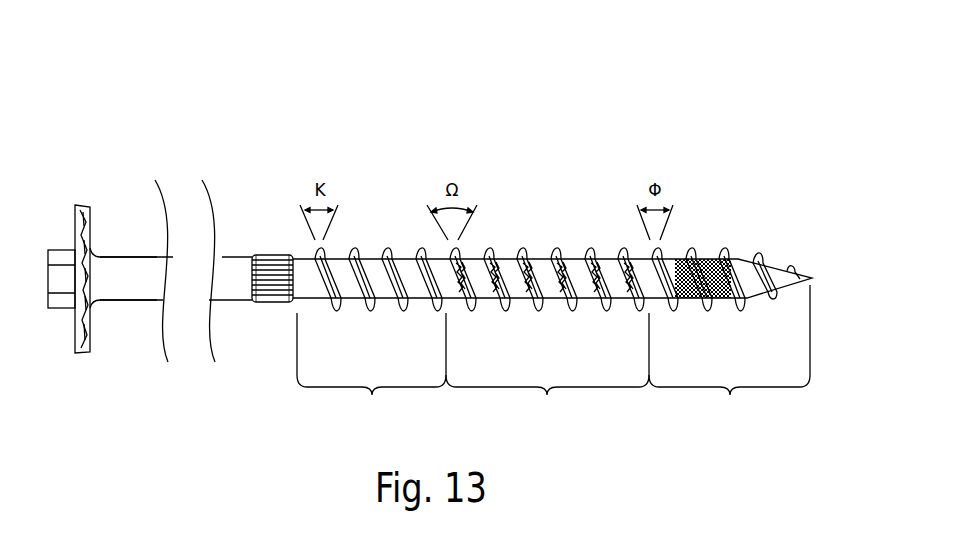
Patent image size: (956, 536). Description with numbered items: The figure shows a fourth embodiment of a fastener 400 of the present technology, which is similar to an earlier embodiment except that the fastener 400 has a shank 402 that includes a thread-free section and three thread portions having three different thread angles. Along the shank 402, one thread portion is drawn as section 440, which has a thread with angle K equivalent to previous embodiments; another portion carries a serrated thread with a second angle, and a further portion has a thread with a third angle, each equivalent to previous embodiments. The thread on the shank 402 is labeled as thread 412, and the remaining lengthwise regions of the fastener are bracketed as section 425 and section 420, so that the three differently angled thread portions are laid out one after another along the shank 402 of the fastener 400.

The fastener 400 is at (180, 112).
The shank 402 is at (133, 272).
The thread 412 is at (504, 258).
The section 440 is at (371, 369).
The serrated thread section 425 is at (547, 369).
The tip section 420 is at (729, 355).